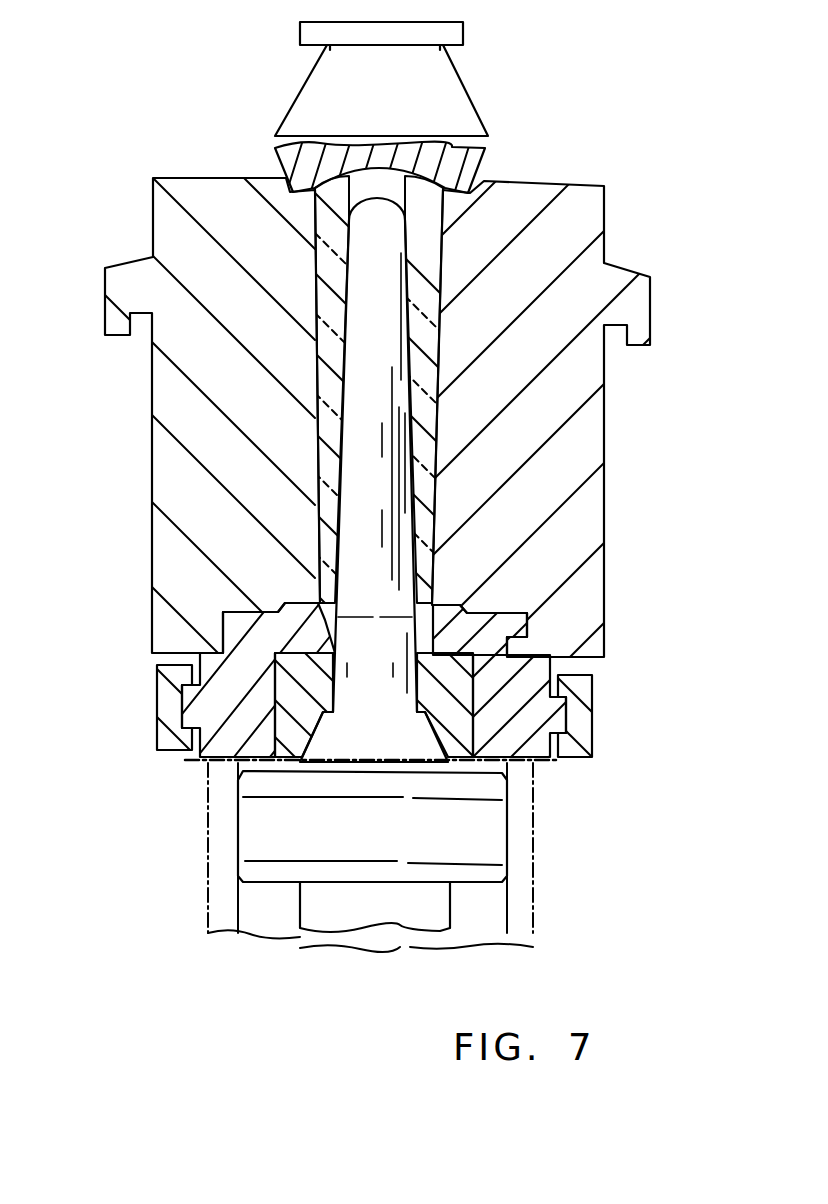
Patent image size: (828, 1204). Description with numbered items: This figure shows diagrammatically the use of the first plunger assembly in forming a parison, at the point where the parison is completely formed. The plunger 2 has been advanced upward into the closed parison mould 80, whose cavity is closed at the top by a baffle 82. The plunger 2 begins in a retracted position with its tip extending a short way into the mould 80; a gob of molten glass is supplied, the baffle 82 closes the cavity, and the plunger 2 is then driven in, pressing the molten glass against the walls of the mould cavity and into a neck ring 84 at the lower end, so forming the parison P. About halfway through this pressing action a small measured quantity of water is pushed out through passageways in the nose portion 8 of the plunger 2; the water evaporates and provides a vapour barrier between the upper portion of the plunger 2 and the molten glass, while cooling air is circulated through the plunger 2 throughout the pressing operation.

The plunger 2 is at (374, 480).
The nose portion 8 is at (398, 203).
The parison mould 80 is at (178, 407).
The baffle 82 is at (302, 162).
The neck ring 84 is at (277, 633).
The parison P is at (422, 266).